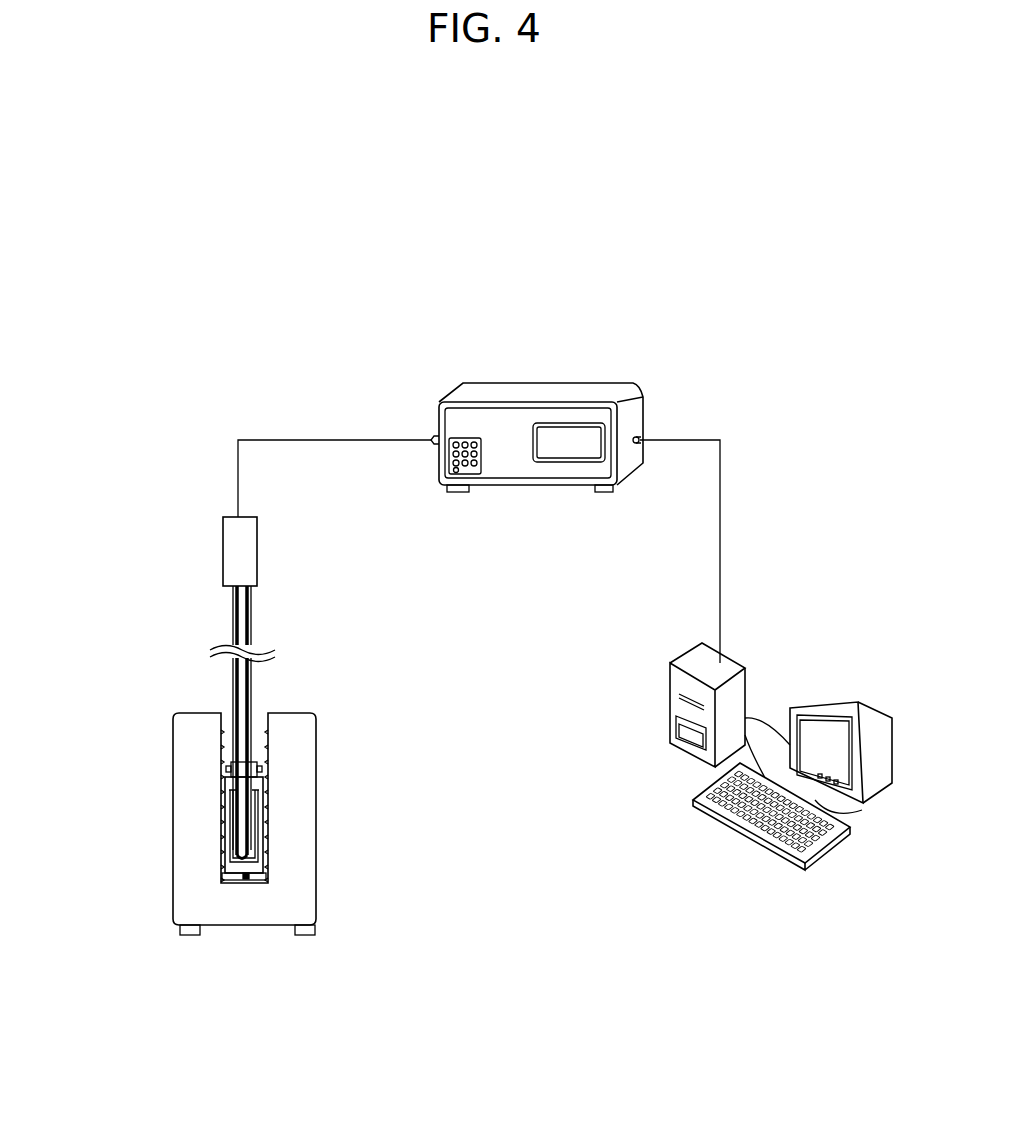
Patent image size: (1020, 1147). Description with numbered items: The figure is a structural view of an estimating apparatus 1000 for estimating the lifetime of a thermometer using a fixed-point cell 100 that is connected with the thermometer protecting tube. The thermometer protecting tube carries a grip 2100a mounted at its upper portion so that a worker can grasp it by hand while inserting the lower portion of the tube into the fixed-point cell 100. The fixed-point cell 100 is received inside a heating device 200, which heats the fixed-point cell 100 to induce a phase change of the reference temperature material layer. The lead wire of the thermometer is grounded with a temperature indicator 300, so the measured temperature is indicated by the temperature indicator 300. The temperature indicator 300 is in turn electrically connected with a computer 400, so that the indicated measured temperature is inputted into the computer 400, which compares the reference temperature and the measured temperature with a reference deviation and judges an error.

The estimating apparatus 1000 is at (218, 303).
The fixed-point cell 100 is at (185, 795).
The heating device 200 is at (298, 834).
The grip 2100a is at (233, 548).
The temperature indicator 300 is at (535, 392).
The computer 400 is at (725, 666).